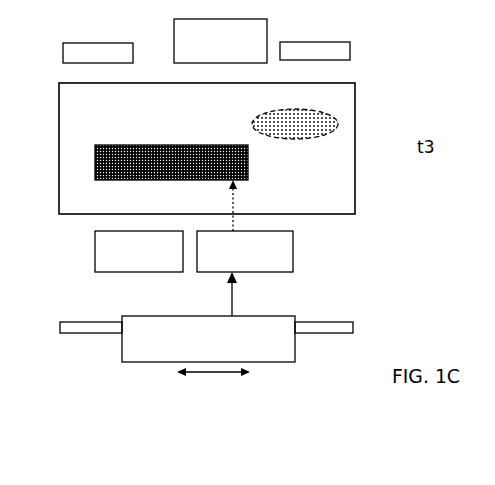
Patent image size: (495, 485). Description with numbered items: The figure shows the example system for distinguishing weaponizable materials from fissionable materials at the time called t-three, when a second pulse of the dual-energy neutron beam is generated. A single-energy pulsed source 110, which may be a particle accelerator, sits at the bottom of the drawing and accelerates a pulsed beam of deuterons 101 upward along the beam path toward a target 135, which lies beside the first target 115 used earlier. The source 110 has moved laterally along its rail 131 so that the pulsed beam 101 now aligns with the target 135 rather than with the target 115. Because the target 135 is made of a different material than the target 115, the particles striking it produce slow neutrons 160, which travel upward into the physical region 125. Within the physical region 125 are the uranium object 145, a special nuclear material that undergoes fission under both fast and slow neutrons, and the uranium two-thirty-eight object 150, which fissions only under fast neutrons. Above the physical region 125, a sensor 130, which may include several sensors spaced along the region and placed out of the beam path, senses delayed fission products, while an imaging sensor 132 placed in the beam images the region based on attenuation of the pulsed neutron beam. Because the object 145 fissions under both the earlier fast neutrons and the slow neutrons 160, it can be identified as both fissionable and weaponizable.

The pulsed neutron beam 101 is at (245, 294).
The source 110 is at (165, 316).
The first target 115 is at (139, 251).
The physical region 125 is at (357, 72).
The sensor 130 is at (206, 52).
The source rail 131 is at (305, 322).
The imaging sensor 132 is at (220, 41).
The target 135 is at (245, 251).
The uranium object 145 is at (113, 145).
The U-238 object 150 is at (253, 121).
The neutrons 160 is at (286, 204).